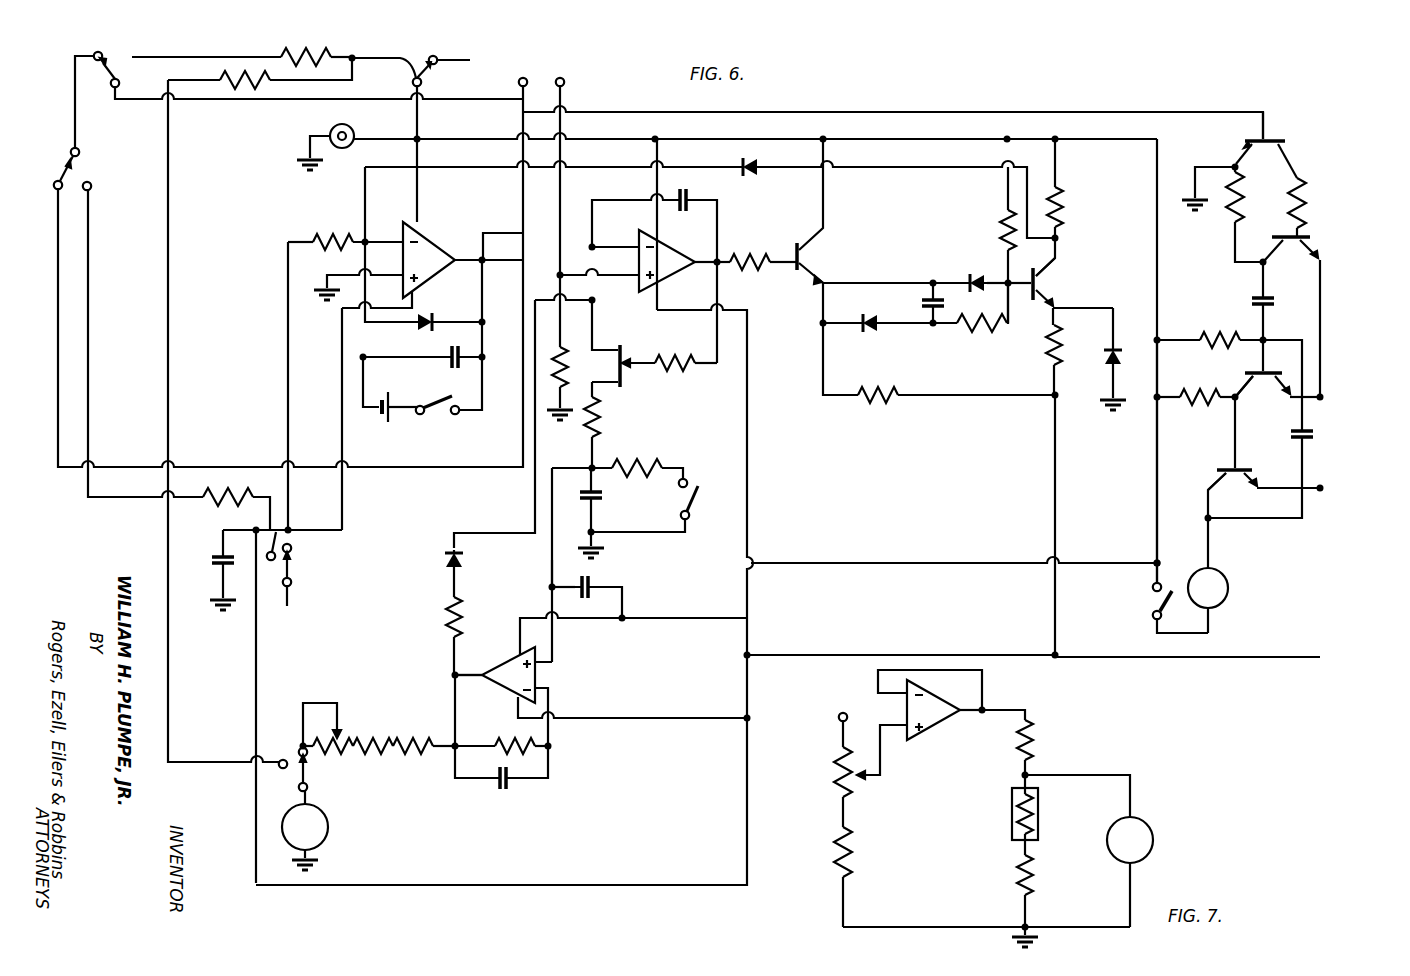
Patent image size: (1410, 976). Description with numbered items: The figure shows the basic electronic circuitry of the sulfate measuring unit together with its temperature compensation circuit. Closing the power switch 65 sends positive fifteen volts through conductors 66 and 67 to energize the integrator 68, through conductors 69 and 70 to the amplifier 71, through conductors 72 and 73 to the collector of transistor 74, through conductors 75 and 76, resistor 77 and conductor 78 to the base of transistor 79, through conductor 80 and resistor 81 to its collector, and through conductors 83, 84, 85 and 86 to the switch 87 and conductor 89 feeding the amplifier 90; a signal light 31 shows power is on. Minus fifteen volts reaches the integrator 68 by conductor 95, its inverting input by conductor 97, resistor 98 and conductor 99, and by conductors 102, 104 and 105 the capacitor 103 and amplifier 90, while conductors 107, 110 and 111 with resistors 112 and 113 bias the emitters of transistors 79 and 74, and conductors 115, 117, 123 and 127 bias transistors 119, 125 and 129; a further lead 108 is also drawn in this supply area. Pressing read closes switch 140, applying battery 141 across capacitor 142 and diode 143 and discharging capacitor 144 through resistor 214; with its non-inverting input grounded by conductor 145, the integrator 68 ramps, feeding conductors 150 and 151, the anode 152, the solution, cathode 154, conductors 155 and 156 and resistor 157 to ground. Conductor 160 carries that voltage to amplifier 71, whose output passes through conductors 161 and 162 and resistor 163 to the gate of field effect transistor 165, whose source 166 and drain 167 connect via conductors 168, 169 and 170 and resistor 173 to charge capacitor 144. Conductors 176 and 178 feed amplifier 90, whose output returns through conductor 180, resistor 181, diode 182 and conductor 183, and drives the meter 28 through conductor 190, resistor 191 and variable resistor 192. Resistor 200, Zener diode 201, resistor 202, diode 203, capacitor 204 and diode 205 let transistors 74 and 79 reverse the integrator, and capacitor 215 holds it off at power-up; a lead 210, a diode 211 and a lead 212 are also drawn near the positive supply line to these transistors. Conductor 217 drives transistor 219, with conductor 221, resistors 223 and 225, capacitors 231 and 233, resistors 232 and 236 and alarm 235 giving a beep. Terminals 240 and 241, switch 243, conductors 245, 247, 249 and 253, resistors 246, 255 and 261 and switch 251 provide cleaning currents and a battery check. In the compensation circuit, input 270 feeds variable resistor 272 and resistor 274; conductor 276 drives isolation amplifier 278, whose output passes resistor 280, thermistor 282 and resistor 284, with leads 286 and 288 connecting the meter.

In FIG. 6, the meter 28 is at (329, 834).
In FIG. 7, the meter 28 is at (1153, 826).
In FIG. 6, the signal light 31 is at (354, 126).
In FIG. 6, the power switch 65 is at (443, 70).
In FIG. 6, the conductor 66 is at (420, 122).
In FIG. 6, the conductor 67 is at (418, 178).
In FIG. 6, the integrator 68 is at (431, 224).
In FIG. 6, the conductor 69 is at (455, 150).
In FIG. 6, the conductor 70 is at (652, 157).
In FIG. 6, the amplifier 71 is at (694, 247).
In FIG. 6, the conductor 72 is at (775, 154).
In FIG. 6, the conductor 73 is at (826, 190).
In FIG. 6, the transistor 74 is at (806, 259).
In FIG. 6, the conductor 75 is at (950, 154).
In FIG. 6, the conductor 76 is at (1008, 196).
In FIG. 6, the resistor 77 is at (1004, 224).
In FIG. 6, the conductor 78 is at (1036, 257).
In FIG. 6, the transistor 79 is at (1043, 286).
In FIG. 6, the conductor 80 is at (1025, 154).
In FIG. 6, the resistor 81 is at (1061, 171).
In FIG. 6, the conductor 83 is at (1163, 266).
In FIG. 6, the conductor 84 is at (1164, 350).
In FIG. 6, the conductor 85 is at (1154, 472).
In FIG. 6, the conductor 86 is at (1163, 575).
In FIG. 6, the switch 87 is at (1150, 610).
In FIG. 6, the conductor 89 is at (997, 562).
In FIG. 6, the amplifier 90 is at (548, 686).
In FIG. 6, the conductor 95 is at (344, 504).
In FIG. 6, the conductor 97 is at (286, 400).
In FIG. 6, the resistor 98 is at (322, 228).
In FIG. 6, the conductor 99 is at (382, 234).
In FIG. 6, the conductor 102 is at (256, 530).
In FIG. 6, the capacitor 103 is at (204, 564).
In FIG. 6, the conductor 104 is at (254, 682).
In FIG. 6, the conductor 105 is at (628, 722).
In FIG. 6, the conductor 107 is at (751, 698).
In FIG. 6, the lead 108 is at (751, 630).
In FIG. 6, the conductor 110 is at (951, 656).
In FIG. 6, the conductor 111 is at (1060, 498).
In FIG. 6, the resistor 112 is at (1052, 336).
In FIG. 6, the resistor 113 is at (862, 405).
In FIG. 6, the conductor 115 is at (1189, 666).
In FIG. 6, the conductor 117 is at (1290, 476).
In FIG. 6, the transistor 119 is at (1238, 478).
In FIG. 6, the conductor 123 is at (1286, 376).
In FIG. 6, the transistor 125 is at (1262, 385).
In FIG. 6, the conductor 127 is at (1324, 314).
In FIG. 6, the transistor 129 is at (1290, 248).
In FIG. 6, the switch 140 is at (431, 426).
In FIG. 6, the battery 141 is at (378, 426).
In FIG. 6, the capacitor 142 is at (450, 368).
In FIG. 6, the diode 143 is at (435, 315).
In FIG. 6, the capacitor 144 is at (610, 504).
In FIG. 6, the conductor 145 is at (322, 260).
In FIG. 6, the conductor 150 is at (438, 230).
In FIG. 6, the conductor 151 is at (421, 470).
In FIG. 6, the anode 152 is at (527, 76).
In FIG. 6, the cathode 154 is at (563, 76).
In FIG. 6, the conductor 155 is at (562, 192).
In FIG. 6, the conductor 156 is at (572, 320).
In FIG. 6, the resistor 157 is at (565, 370).
In FIG. 6, the conductor 160 is at (616, 298).
In FIG. 6, the conductor 161 is at (690, 284).
In FIG. 6, the conductor 162 is at (720, 294).
In FIG. 6, the resistor 163 is at (688, 376).
In FIG. 6, the junction field effect transistor 165 is at (631, 372).
In FIG. 6, the source 166 is at (626, 346).
In FIG. 6, the drain 167 is at (596, 390).
In FIG. 6, the conductor 168 is at (598, 324).
In FIG. 6, the conductor 169 is at (596, 268).
In FIG. 6, the conductor 170 is at (598, 246).
In FIG. 6, the resistor 173 is at (600, 432).
In FIG. 6, the conductor 176 is at (547, 575).
In FIG. 6, the conductor 178 is at (556, 644).
In FIG. 6, the conductor 180 is at (466, 676).
In FIG. 6, the resistor 181 is at (446, 618).
In FIG. 6, the diode 182 is at (439, 570).
In FIG. 6, the conductor 183 is at (526, 511).
In FIG. 6, the conductor 190 is at (452, 714).
In FIG. 6, the resistor 191 is at (428, 762).
In FIG. 6, the variable resistor 192 is at (338, 734).
In FIG. 6, the resistor 200 is at (750, 252).
In FIG. 6, the Zener diode 201 is at (872, 336).
In FIG. 6, the resistor 202 is at (975, 347).
In FIG. 6, the diode 203 is at (977, 268).
In FIG. 6, the capacitor 204 is at (914, 302).
In FIG. 6, the diode 205 is at (1096, 370).
In FIG. 6, the lead 210 is at (870, 182).
In FIG. 6, the diode 211 is at (758, 176).
In FIG. 6, the lead 212 is at (717, 168).
In FIG. 6, the resistor 214 is at (635, 457).
In FIG. 6, the capacitor 215 is at (594, 580).
In FIG. 6, the conductor 217 is at (1079, 114).
In FIG. 6, the transistor 219 is at (1275, 135).
In FIG. 6, the conductor 221 is at (1225, 150).
In FIG. 6, the resistor 223 is at (1230, 218).
In FIG. 6, the resistor 225 is at (1302, 188).
In FIG. 6, the capacitor 231 is at (1244, 306).
In FIG. 6, the resistor 232 is at (1226, 332).
In FIG. 6, the capacitor 233 is at (1292, 446).
In FIG. 6, the alarm 235 is at (1229, 592).
In FIG. 6, the resistor 236 is at (1205, 408).
In FIG. 6, the switch terminal 240 is at (384, 73).
In FIG. 6, the switch terminal 241 is at (273, 562).
In FIG. 6, the double-pole double-throw switch 243 is at (98, 83).
In FIG. 6, the conductor 245 is at (392, 50).
In FIG. 6, the resistor 246 is at (288, 52).
In FIG. 6, the conductor 247 is at (184, 114).
In FIG. 6, the conductor 249 is at (74, 118).
In FIG. 6, the switch 251 is at (73, 152).
In FIG. 6, the conductor 253 is at (88, 300).
In FIG. 6, the resistor 255 is at (233, 491).
In FIG. 6, the resistor 261 is at (249, 102).
In FIG. 7, the input 270 is at (840, 718).
In FIG. 7, the variable resistor 272 is at (831, 782).
In FIG. 7, the resistor 274 is at (853, 860).
In FIG. 7, the conductor 276 is at (883, 764).
In FIG. 7, the isolation amplifier 278 is at (938, 723).
In FIG. 7, the resistor 280 is at (1036, 740).
In FIG. 7, the thermistor 282 is at (1039, 802).
In FIG. 7, the resistor 284 is at (1033, 872).
In FIG. 7, the lead 286 is at (1102, 766).
In FIG. 7, the lead 288 is at (1078, 928).